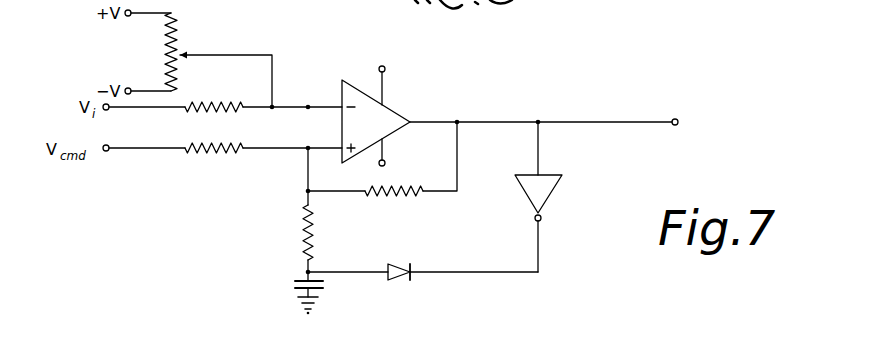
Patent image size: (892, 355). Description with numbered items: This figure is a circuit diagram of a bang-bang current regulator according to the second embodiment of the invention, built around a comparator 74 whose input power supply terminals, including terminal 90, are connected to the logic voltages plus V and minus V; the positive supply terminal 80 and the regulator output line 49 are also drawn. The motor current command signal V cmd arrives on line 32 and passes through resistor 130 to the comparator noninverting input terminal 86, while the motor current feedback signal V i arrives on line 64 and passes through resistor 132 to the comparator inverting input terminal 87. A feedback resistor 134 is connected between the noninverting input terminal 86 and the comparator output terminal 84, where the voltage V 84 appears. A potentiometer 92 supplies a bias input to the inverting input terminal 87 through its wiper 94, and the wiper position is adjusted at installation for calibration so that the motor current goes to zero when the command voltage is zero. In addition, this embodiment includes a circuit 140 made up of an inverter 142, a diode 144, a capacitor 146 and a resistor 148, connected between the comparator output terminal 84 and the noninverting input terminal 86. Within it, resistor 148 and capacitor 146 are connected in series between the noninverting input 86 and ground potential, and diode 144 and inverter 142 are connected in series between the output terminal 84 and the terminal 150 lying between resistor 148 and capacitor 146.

The line 32 is at (157, 150).
The output line 49 is at (574, 121).
The line 64 is at (135, 108).
The comparator 74 is at (384, 120).
The positive supply terminal 80 is at (380, 69).
The comparator output terminal 84 is at (457, 120).
The comparator noninverting input terminal 86 is at (308, 146).
The comparator inverting input terminal 87 is at (327, 85).
The input power supply terminal 90 is at (387, 160).
The potentiometer 92 is at (172, 44).
The wiper 94 is at (214, 55).
The resistor 130 is at (203, 150).
The resistor 132 is at (194, 103).
The feedback resistor 134 is at (397, 196).
The circuit 140 is at (465, 218).
The inverter 142 is at (550, 195).
The diode 144 is at (397, 278).
The capacitor 146 is at (297, 281).
The resistor 148 is at (314, 228).
The terminal 150 is at (305, 268).